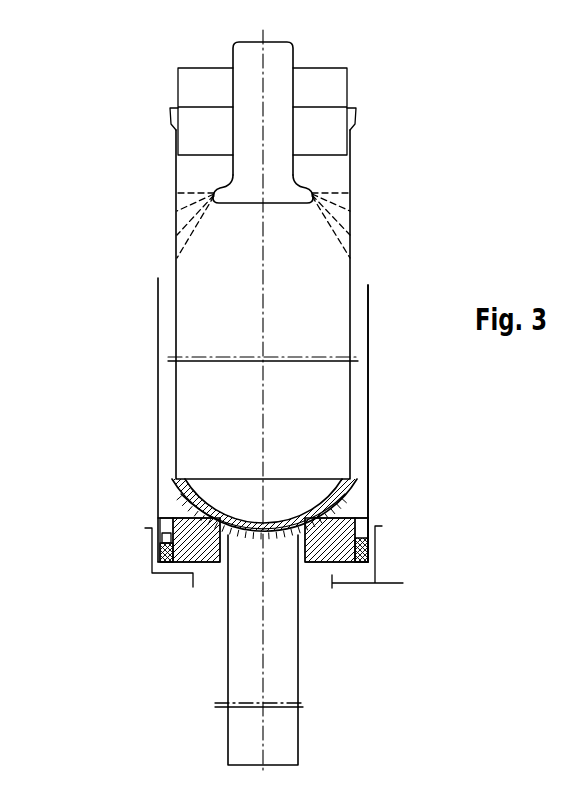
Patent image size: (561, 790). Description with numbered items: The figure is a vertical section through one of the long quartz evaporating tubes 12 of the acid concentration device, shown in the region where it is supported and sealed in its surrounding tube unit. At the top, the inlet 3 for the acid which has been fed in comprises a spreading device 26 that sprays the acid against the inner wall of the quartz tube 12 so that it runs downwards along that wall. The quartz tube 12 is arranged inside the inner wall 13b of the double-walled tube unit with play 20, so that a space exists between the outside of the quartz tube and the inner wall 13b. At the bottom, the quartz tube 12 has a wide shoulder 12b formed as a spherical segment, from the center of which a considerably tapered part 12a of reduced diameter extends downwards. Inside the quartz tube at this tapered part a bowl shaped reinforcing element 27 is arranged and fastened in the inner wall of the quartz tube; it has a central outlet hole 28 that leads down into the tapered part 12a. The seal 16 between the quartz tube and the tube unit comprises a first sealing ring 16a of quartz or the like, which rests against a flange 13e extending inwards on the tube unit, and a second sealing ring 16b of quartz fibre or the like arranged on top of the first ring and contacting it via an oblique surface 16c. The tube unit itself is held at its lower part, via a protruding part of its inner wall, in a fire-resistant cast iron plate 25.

The inlet 3 is at (363, 73).
The spreading device 26 is at (278, 57).
The quartz evaporating tube 12 is at (337, 190).
The tapered part 12a is at (283, 655).
The spherical segment formed shoulder 12b is at (158, 512).
The inner wall of the tube unit 13b is at (370, 335).
The flange 13e is at (355, 553).
The seal 16 is at (243, 524).
The first sealing ring 16a is at (188, 557).
The second sealing ring 16b is at (158, 532).
The oblique surface 16c is at (155, 557).
The play 20 is at (370, 297).
The cast iron plate 25 is at (375, 578).
The bowl shaped reinforcing element 27 is at (183, 483).
The central outlet hole 28 is at (275, 522).